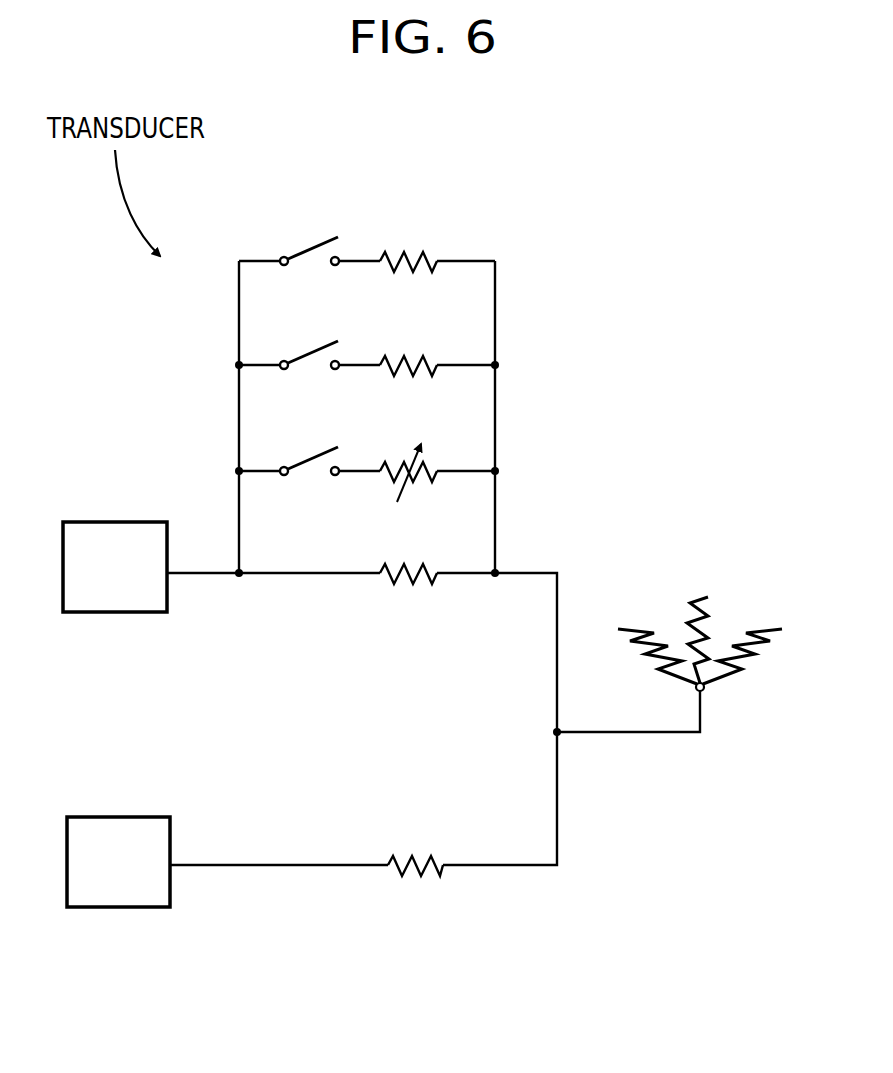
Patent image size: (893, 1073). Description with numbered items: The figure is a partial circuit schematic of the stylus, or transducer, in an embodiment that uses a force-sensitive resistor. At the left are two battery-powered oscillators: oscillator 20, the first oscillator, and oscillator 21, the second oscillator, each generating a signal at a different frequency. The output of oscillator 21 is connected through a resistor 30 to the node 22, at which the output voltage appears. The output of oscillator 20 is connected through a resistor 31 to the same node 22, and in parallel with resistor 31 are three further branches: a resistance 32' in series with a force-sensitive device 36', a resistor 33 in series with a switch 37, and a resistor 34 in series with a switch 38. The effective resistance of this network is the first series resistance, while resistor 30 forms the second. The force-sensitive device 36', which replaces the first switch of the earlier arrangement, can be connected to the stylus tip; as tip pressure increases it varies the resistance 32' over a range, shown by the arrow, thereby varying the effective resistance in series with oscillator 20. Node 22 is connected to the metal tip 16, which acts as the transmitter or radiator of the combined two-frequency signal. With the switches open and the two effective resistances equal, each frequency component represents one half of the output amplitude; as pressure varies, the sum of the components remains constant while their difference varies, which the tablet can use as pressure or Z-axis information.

The metal tip 16 is at (704, 690).
The oscillator 20 is at (132, 613).
The oscillator 21 is at (132, 907).
The node 22 is at (559, 735).
The resistor 30 is at (420, 855).
The resistor 31 is at (395, 577).
The resistance 32' is at (433, 462).
The resistor 33 is at (410, 361).
The resistor 34 is at (410, 256).
The force-sensitive device 36' is at (296, 448).
The switch 37 is at (307, 352).
The switch 38 is at (305, 248).